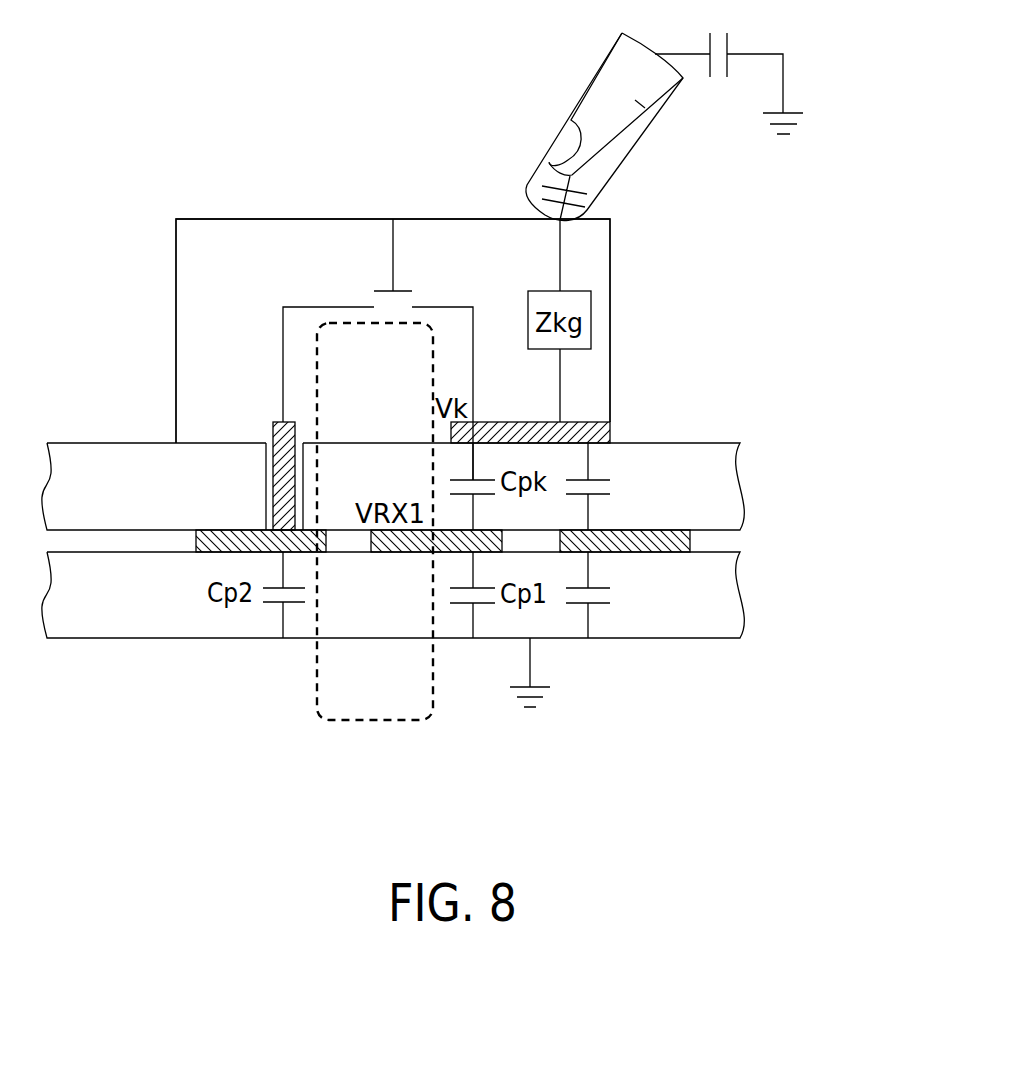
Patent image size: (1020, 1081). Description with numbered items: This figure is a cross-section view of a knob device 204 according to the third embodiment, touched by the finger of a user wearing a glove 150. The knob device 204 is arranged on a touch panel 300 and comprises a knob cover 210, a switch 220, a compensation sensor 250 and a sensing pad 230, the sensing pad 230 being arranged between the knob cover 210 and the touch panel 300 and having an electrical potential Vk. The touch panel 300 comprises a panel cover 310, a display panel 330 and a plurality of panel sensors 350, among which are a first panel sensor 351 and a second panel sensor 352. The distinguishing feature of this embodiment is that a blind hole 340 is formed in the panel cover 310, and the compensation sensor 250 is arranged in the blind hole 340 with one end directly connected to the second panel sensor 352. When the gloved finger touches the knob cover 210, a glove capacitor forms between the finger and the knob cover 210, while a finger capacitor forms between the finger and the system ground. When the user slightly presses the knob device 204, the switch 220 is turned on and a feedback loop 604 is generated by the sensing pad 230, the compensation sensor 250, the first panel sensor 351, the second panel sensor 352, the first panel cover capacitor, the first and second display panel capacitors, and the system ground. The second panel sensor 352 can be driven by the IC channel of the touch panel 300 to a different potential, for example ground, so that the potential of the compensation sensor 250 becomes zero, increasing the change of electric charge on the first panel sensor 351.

The knob device 204 is at (248, 148).
The glove 150 is at (553, 125).
The knob cover 210 is at (314, 219).
The switch 220 is at (393, 253).
The compensation sensor 250 is at (283, 490).
The blind hole 340 is at (303, 447).
The sensing pad 230 is at (605, 433).
The touch panel 300 is at (815, 467).
The panel cover 310 is at (742, 488).
The display panel 330 is at (742, 595).
The second panel sensor 352 is at (197, 552).
The first panel sensor 351 is at (403, 552).
The panel sensors 350 is at (660, 552).
The feedback loop 604 is at (375, 722).